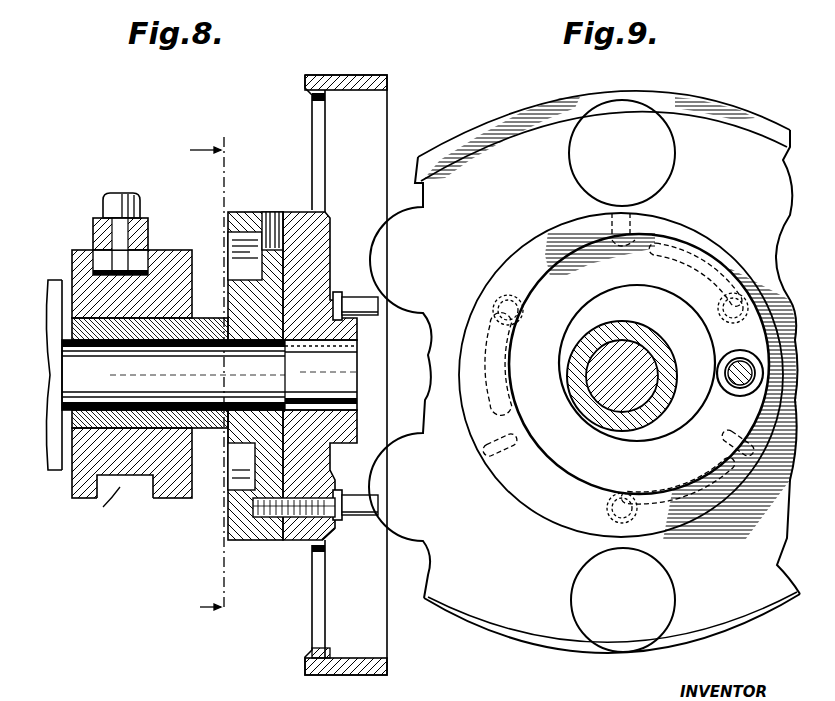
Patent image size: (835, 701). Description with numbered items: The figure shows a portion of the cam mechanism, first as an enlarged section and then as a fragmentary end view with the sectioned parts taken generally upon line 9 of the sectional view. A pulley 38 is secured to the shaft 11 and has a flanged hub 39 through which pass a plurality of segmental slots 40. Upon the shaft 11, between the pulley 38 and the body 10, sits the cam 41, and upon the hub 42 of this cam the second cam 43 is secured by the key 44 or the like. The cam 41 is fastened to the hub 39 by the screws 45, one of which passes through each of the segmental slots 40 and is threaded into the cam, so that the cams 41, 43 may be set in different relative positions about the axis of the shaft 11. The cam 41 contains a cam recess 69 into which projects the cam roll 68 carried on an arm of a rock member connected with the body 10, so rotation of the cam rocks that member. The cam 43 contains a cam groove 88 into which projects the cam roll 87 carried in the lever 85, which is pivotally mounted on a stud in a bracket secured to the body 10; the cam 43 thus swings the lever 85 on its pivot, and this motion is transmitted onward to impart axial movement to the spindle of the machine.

In FIG. 8, the section line 9— 9 is at (207, 380).
In FIG. 8, the body 10 is at (58, 472).
In FIG. 8, the shaft 11 is at (209, 375).
In FIG. 9, the shaft 11 is at (648, 364).
In FIG. 8, the pulley 38 is at (380, 90).
In FIG. 9, the pulley 38 is at (584, 372).
In FIG. 8, the flanged hub 39 is at (320, 250).
In FIG. 8, the segmental slots 40 is at (328, 533).
In FIG. 9, the segmental slots 40 is at (705, 265).
In FIG. 8, the cam 41 is at (232, 531).
In FIG. 9, the cam 41 is at (543, 503).
In FIG. 8, the hub 42 is at (220, 430).
In FIG. 8, the cam 43 is at (151, 493).
In FIG. 8, the key 44 is at (186, 292).
In FIG. 8, the screws 45 is at (378, 305).
In FIG. 9, the screws 45 is at (522, 298).
In FIG. 9, the cam roll 68 is at (732, 396).
In FIG. 8, the cam recess 69 is at (234, 241).
In FIG. 9, the cam recess 69 is at (598, 433).
In FIG. 8, the lever 85 is at (145, 217).
In FIG. 8, the cam roll 87 is at (120, 262).
In FIG. 8, the cam groove 88 is at (106, 509).